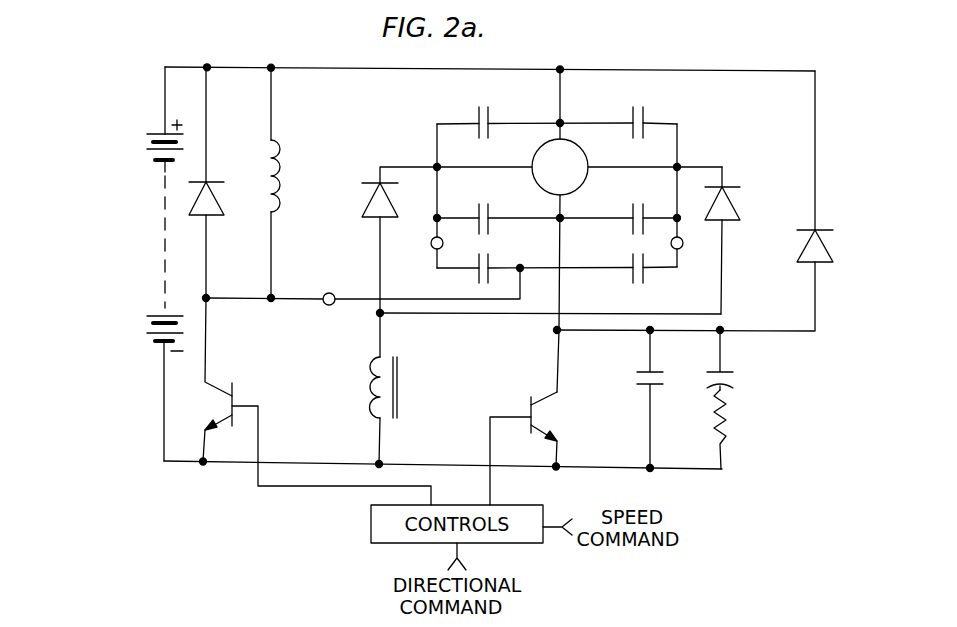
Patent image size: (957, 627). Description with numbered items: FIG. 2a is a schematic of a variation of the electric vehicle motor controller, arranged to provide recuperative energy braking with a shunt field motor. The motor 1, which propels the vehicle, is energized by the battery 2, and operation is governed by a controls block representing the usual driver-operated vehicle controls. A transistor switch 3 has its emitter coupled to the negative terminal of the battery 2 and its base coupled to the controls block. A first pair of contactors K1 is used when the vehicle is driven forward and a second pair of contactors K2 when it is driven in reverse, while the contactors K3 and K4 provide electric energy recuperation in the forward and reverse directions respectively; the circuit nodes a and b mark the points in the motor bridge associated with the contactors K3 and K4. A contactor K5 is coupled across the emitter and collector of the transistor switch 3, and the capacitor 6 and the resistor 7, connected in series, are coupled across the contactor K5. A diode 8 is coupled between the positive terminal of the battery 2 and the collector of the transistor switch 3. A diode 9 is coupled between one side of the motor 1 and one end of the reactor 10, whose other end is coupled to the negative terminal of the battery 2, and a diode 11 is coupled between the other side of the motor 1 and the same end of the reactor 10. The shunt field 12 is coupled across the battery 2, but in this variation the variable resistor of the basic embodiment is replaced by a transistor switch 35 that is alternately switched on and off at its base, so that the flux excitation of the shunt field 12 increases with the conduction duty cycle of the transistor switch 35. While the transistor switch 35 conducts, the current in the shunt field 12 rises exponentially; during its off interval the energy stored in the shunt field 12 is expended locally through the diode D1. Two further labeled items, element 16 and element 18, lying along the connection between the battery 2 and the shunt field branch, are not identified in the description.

The motor 1 is at (586, 150).
The battery 2 is at (163, 289).
The transistor switch 3 is at (529, 405).
The capacitor 6 is at (724, 374).
The resistor 7 is at (725, 416).
The diode 8 is at (805, 228).
The diode 9 is at (364, 186).
The reactor 10 is at (368, 373).
The diode 11 is at (735, 190).
The shunt field 12 is at (265, 160).
The terminal c 16 is at (325, 306).
The conductor 18 is at (229, 299).
The transistor switch 35 is at (233, 395).
The diode D1 is at (212, 218).
The first pair of contactors K1 is at (660, 196).
The second pair of contactors K2 is at (646, 113).
The contactor K3 is at (476, 271).
The contactor K4 is at (645, 273).
The contactor K5 is at (648, 385).
The circuit node a is at (444, 244).
The circuit node b is at (670, 244).